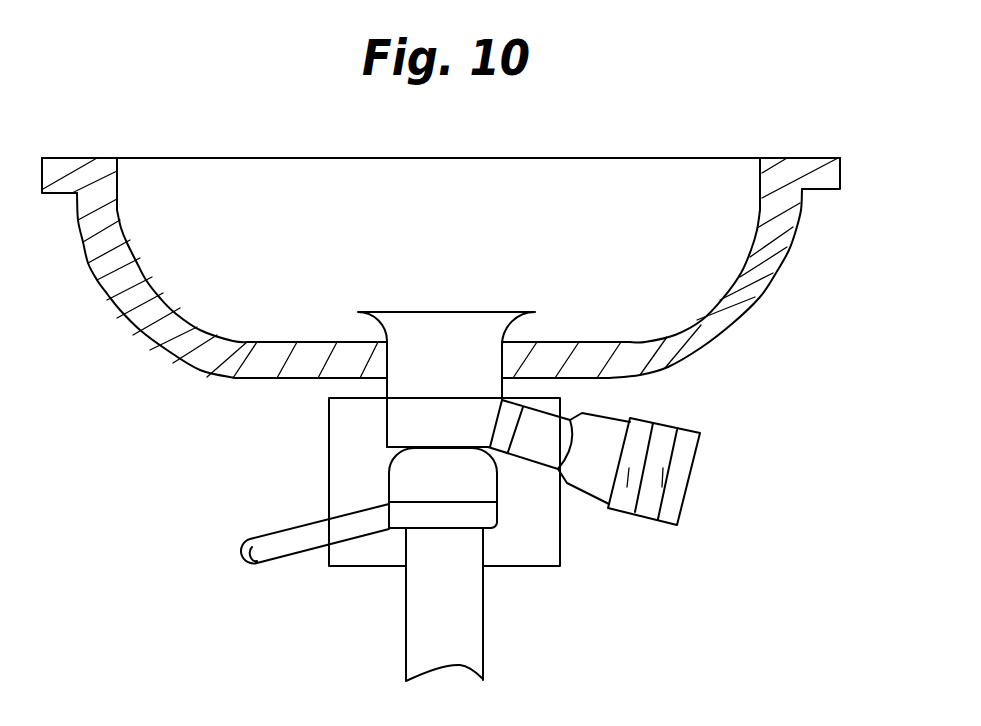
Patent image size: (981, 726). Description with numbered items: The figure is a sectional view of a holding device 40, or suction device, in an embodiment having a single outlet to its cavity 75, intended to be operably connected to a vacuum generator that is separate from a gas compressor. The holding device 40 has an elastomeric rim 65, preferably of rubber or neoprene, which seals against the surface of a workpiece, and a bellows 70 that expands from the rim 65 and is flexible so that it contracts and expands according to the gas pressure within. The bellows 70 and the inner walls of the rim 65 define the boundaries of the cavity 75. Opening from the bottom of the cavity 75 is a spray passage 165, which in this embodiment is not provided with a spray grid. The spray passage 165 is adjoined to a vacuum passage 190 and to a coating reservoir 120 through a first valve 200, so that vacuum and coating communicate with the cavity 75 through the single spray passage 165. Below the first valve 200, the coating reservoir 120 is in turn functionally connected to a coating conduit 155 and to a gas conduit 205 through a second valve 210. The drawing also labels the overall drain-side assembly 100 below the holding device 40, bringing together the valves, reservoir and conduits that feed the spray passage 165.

The holding device 40 is at (255, 137).
The rim 65 is at (815, 160).
The bellows 70 is at (780, 253).
The cavity 75 is at (705, 263).
The spray passage 165 is at (417, 340).
The first valve 200 is at (405, 423).
The coating reservoir 120 is at (400, 478).
The coating conduit 155 is at (327, 457).
The vacuum passage 190 is at (677, 438).
The second valve 210 is at (487, 516).
The gas conduit 205 is at (472, 640).
The drain assembly 100 is at (390, 573).